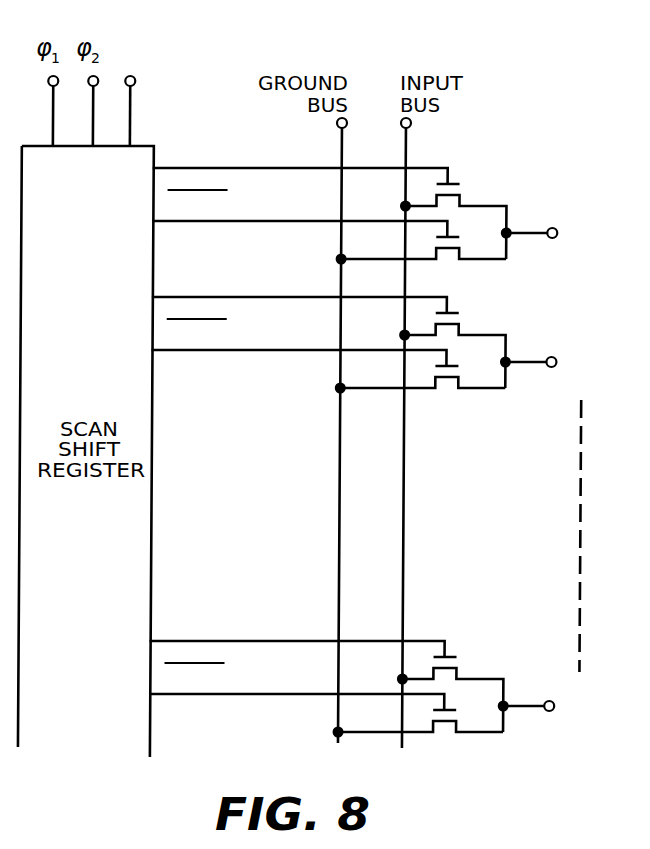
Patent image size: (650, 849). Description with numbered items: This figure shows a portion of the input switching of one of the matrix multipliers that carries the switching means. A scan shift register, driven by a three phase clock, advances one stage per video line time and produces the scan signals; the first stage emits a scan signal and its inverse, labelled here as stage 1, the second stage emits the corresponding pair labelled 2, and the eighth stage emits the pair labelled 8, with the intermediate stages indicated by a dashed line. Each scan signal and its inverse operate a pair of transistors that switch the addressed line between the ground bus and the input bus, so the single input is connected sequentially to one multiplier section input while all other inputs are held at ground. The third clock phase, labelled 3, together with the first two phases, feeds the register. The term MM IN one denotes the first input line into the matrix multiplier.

The scan stage 1 switching transistors (MM IN 1) 1 is at (377, 202).
The scan stage 2 switching transistors (MM IN 2) 2 is at (379, 331).
The clock phase input φ 3 is at (132, 90).
The scan stage 8 switching transistors (MM IN 8) 8 is at (376, 674).